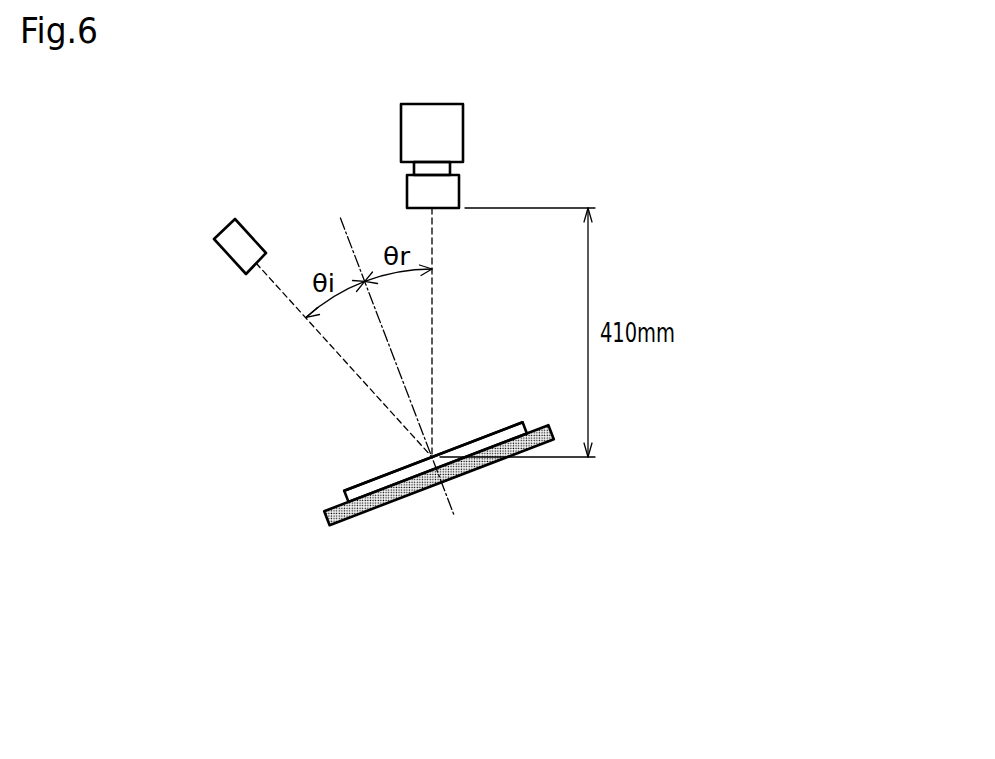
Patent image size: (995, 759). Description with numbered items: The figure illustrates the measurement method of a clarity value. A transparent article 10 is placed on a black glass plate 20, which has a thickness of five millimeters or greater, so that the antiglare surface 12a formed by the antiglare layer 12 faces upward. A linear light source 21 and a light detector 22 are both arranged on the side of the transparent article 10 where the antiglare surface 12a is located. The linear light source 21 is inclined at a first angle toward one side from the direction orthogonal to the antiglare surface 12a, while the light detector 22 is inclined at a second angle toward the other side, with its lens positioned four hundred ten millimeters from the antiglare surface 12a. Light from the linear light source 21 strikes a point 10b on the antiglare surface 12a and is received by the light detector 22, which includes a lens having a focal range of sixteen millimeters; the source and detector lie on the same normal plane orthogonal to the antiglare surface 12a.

The transparent article 10 is at (402, 446).
The measurement point on surface 10b is at (428, 456).
The antiglare layer 12 is at (492, 462).
The antiglare surface 12a is at (508, 425).
The black glass plate 20 is at (348, 517).
The linear light source 21 is at (228, 257).
The light detector 22 is at (465, 131).